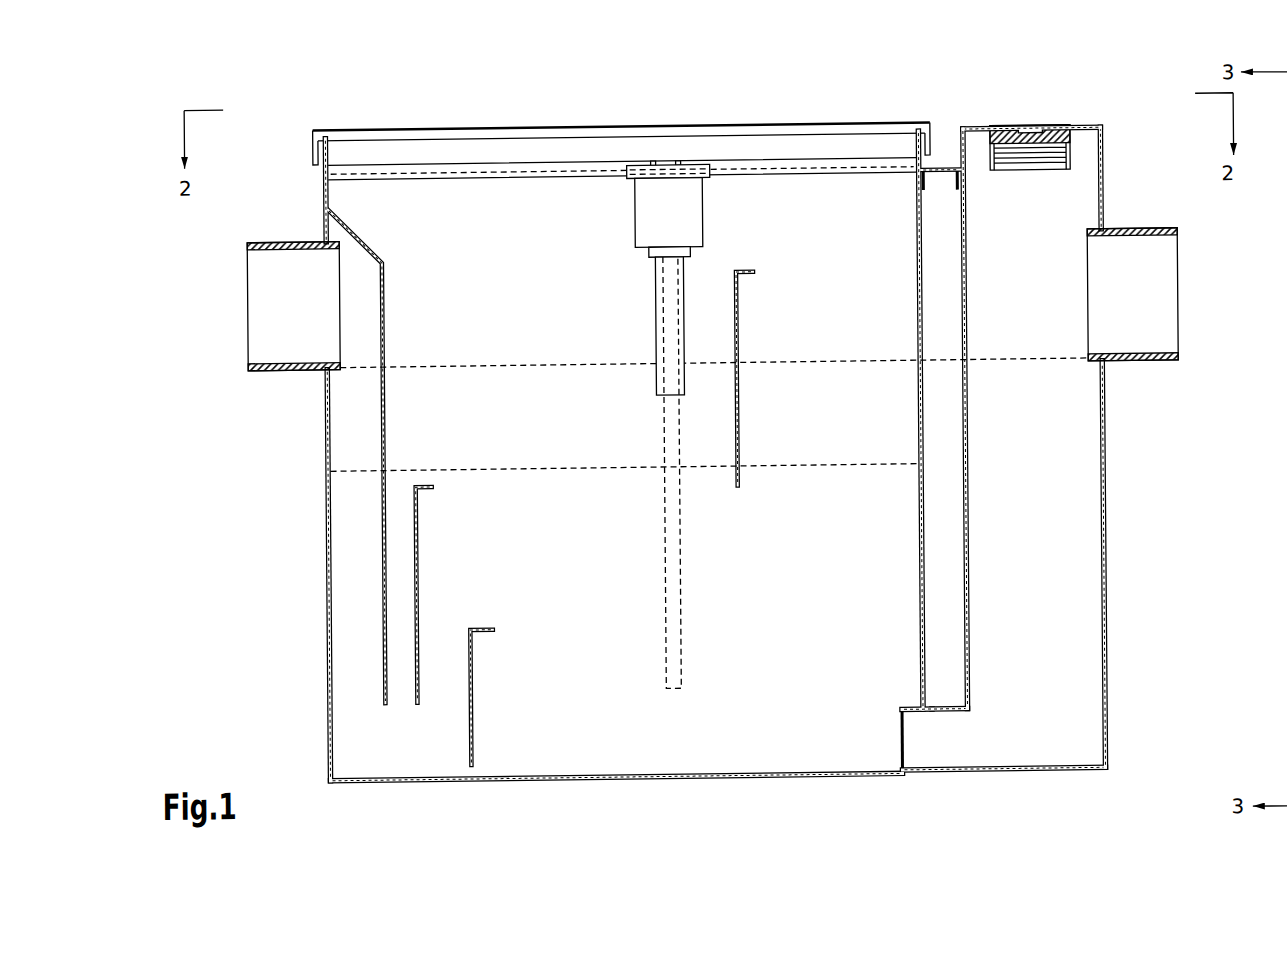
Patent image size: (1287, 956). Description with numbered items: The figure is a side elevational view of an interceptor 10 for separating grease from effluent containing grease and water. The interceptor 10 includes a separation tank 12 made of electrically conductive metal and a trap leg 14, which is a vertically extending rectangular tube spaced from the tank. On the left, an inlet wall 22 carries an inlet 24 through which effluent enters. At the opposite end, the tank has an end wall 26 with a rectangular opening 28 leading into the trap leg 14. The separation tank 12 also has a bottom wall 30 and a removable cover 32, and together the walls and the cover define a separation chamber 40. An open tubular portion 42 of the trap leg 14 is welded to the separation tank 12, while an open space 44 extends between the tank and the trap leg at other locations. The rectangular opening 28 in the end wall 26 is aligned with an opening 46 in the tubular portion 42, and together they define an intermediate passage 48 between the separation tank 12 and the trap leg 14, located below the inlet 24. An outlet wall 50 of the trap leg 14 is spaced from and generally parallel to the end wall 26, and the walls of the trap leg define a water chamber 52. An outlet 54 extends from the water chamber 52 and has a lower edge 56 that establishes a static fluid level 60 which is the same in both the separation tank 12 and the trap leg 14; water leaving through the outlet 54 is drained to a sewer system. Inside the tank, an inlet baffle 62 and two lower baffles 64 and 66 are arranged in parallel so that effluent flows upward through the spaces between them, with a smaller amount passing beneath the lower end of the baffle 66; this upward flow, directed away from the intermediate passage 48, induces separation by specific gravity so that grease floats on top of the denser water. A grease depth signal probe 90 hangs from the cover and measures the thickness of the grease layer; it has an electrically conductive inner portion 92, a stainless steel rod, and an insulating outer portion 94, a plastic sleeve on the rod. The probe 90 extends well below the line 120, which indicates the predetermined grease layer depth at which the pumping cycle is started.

The interceptor 10 is at (294, 698).
The separation tank 12 is at (324, 493).
The trap leg 14 is at (1109, 638).
The inlet wall 22 is at (324, 560).
The inlet 24 is at (296, 365).
The end wall 26 is at (920, 576).
The rectangular opening 28 is at (922, 778).
The bottom wall 30 is at (700, 782).
The removable cover 32 is at (637, 124).
The separation chamber 40 is at (533, 310).
The open tubular portion 42 is at (898, 708).
The open space 44 is at (947, 506).
The opening 46 is at (899, 751).
The intermediate passage 48 is at (938, 733).
The outlet wall 50 is at (1106, 555).
The water chamber 52 is at (1053, 457).
The outlet 54 is at (1150, 234).
The lower edge 56 is at (1162, 356).
The static fluid level 60 is at (1020, 361).
The inlet baffle 62 is at (386, 446).
The lower baffle 64 is at (417, 574).
The lower baffle 66 is at (474, 680).
The grease depth signal probe 90 is at (654, 495).
The inner portion 92 is at (672, 585).
The outer portion 94 is at (657, 540).
The predetermined grease layer depth 120 is at (772, 466).